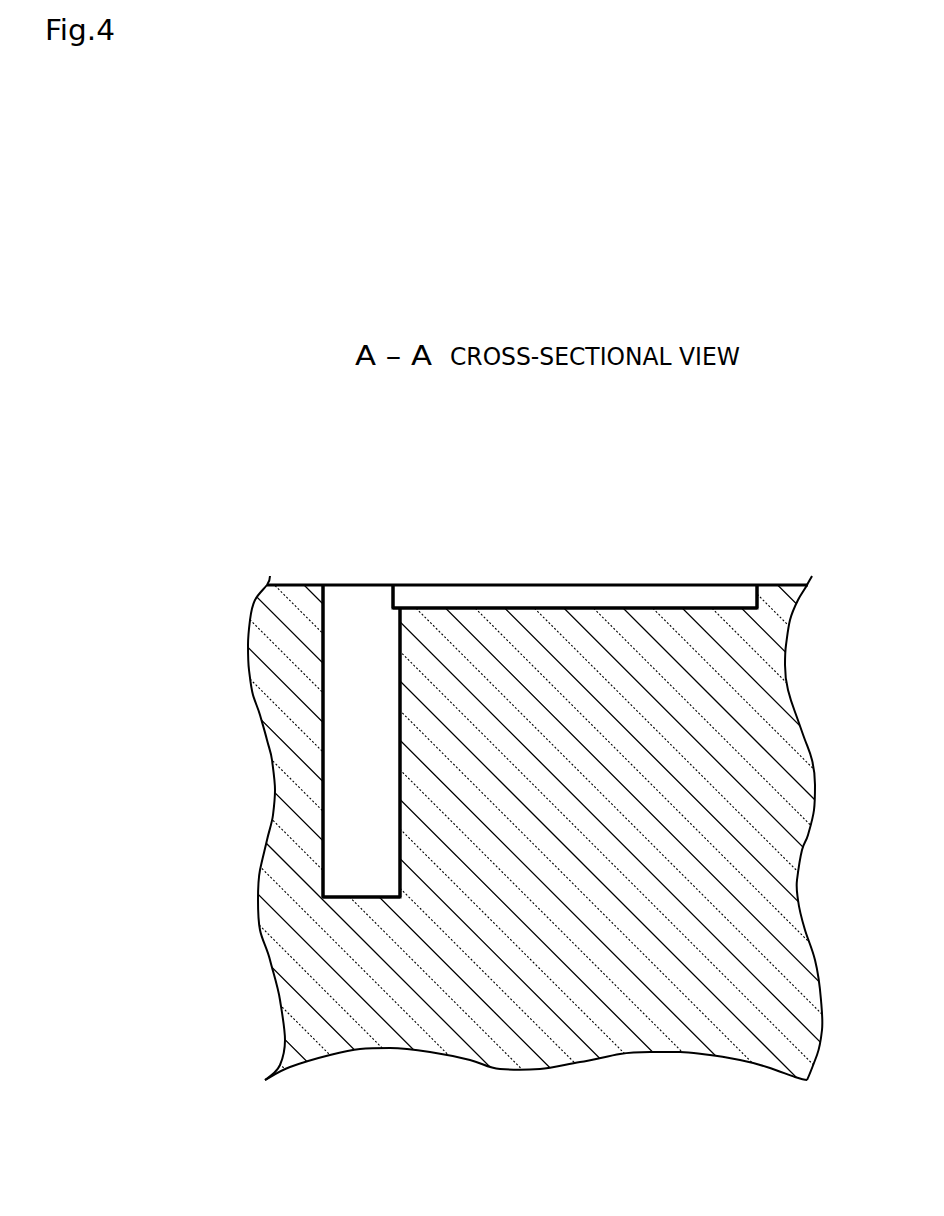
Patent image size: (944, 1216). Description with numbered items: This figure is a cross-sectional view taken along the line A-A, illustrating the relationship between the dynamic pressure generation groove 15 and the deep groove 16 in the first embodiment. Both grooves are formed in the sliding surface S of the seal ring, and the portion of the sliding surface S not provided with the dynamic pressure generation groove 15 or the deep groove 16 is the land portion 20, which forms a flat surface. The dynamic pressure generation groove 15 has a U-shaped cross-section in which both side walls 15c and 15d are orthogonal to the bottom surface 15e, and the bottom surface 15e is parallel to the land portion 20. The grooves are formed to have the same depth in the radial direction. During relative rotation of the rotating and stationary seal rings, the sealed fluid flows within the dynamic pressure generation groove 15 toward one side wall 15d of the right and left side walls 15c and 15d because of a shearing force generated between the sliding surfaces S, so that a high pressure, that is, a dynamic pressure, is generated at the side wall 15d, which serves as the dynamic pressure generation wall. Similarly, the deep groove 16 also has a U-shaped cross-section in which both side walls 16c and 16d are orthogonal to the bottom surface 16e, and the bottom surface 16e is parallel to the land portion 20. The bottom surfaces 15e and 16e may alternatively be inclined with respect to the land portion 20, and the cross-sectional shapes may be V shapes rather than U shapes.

The sliding surface S is at (292, 584).
The deep groove 16 is at (358, 673).
The side wall 16c is at (400, 798).
The side wall 16d is at (326, 736).
The bottom surface 16e is at (360, 896).
The dynamic pressure generation groove 15 is at (582, 528).
The side wall 15c is at (420, 600).
The side wall 15d is at (748, 588).
The bottom surface 15e is at (573, 606).
The land portion 20 is at (787, 588).